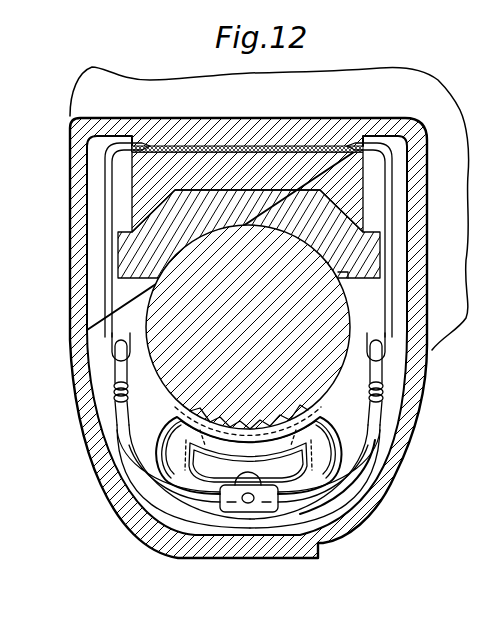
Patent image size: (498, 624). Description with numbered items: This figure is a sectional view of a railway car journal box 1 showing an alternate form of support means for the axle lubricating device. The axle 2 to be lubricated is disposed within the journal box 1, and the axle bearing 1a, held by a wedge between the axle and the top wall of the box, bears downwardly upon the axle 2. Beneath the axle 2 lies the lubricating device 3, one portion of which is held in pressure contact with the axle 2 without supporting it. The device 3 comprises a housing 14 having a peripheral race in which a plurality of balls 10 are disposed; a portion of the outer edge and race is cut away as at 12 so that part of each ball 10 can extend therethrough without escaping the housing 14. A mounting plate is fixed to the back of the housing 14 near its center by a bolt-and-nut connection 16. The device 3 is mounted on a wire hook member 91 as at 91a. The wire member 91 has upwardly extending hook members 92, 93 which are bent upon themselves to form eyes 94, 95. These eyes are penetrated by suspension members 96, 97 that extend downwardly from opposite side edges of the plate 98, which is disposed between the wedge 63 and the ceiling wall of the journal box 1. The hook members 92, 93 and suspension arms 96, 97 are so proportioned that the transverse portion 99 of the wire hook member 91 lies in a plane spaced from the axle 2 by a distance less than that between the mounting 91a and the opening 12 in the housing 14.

The journal box 1 is at (150, 118).
The axle bearing 1a is at (348, 278).
The axle 2 is at (152, 296).
The lubricating device 3 is at (342, 434).
The balls 10 is at (207, 437).
The cut-away portion 12 is at (323, 423).
The housing 14 is at (337, 422).
The bolt-and-nut connection 16 is at (246, 503).
The wedge 63 is at (229, 122).
The wire hook member 91 is at (354, 492).
The mounting 91a is at (262, 512).
The hook member 92 is at (382, 427).
The hook member 93 is at (117, 436).
The eye 94 is at (377, 378).
The eye 95 is at (125, 384).
The suspension member 96 is at (386, 313).
The suspension member 97 is at (112, 313).
The plate 98 is at (285, 146).
The transverse portion 99 is at (190, 500).